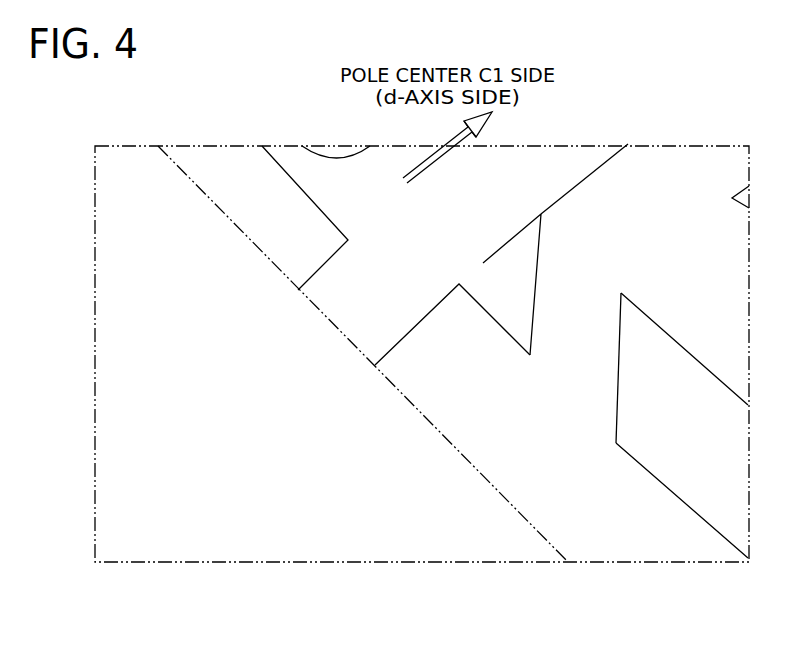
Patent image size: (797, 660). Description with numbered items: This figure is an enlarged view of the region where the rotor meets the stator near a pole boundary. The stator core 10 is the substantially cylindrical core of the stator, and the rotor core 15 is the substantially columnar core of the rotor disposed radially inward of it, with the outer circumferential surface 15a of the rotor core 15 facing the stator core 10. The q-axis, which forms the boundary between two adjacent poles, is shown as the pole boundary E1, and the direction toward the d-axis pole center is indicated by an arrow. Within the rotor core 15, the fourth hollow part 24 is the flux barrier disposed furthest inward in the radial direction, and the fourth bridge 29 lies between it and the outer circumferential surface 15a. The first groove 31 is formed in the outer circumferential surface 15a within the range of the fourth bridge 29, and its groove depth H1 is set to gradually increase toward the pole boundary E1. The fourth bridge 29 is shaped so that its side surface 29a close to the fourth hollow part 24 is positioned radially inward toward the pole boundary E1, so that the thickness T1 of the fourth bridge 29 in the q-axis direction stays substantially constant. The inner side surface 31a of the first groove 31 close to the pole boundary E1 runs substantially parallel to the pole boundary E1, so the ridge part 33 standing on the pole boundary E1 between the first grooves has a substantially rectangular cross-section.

The stator core 10 is at (250, 218).
The rotor core 15 is at (447, 418).
The outer circumferential surface 15a is at (587, 167).
The fourth hollow part 24 is at (707, 372).
The fourth bridge 29 is at (573, 245).
The side surface 29a is at (618, 386).
The first groove 31 is at (535, 258).
The inner side surface 31a is at (523, 347).
The ridge part 33 is at (400, 340).
The pole boundary E1 is at (332, 318).
The groove depth H1 is at (533, 303).
The thickness T1 is at (619, 317).